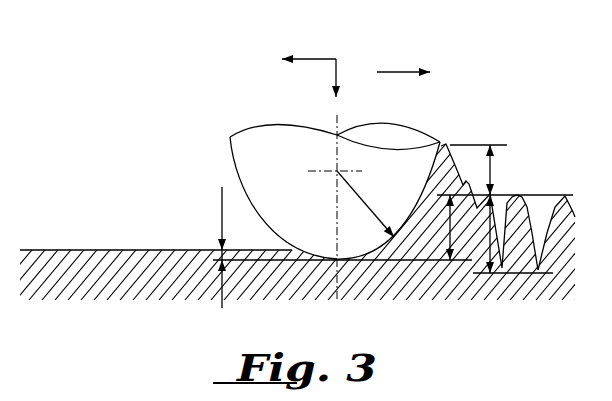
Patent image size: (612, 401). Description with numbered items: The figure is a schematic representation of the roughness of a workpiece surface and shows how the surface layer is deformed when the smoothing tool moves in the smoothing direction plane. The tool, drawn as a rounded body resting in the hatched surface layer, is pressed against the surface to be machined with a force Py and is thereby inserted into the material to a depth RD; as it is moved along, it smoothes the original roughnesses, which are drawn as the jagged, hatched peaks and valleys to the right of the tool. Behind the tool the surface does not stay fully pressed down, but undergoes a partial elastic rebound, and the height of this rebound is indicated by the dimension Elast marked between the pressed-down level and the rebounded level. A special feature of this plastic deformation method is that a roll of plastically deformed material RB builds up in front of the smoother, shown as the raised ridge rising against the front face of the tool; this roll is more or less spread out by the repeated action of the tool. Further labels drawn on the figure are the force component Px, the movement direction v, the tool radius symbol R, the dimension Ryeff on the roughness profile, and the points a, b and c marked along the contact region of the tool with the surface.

The horizontal cutting force component Px is at (309, 41).
The force Py is at (353, 83).
The cutting velocity v is at (405, 58).
The tool nose radius R is at (365, 204).
The roll of plastically deformed material RB is at (477, 170).
The depth RD is at (437, 227).
The effective roughness height Ryeff is at (479, 234).
The height of elastic rebound Elast is at (186, 247).
The tool contact region a is at (298, 235).
The tool contact region b is at (348, 244).
The tool contact region c is at (418, 169).